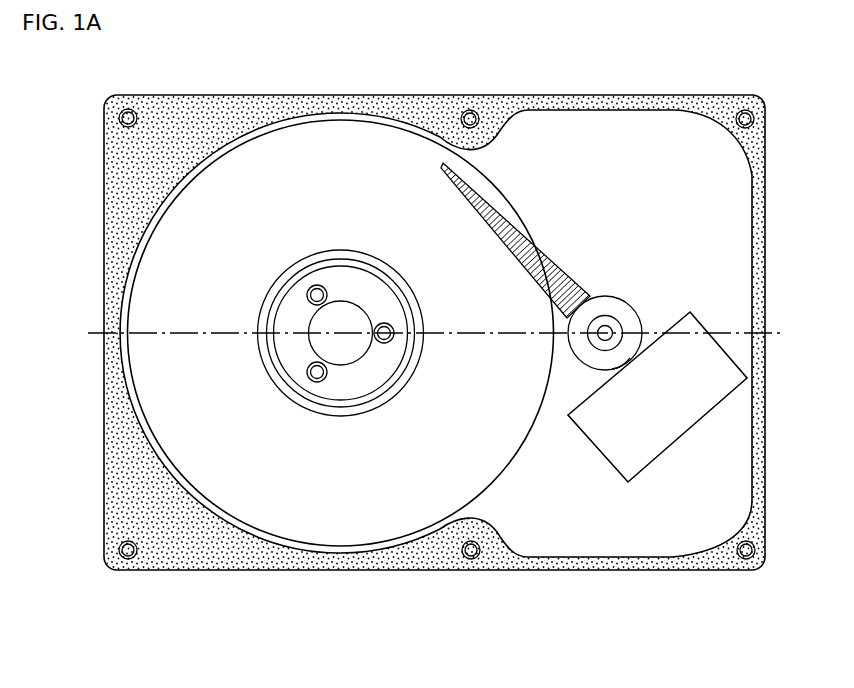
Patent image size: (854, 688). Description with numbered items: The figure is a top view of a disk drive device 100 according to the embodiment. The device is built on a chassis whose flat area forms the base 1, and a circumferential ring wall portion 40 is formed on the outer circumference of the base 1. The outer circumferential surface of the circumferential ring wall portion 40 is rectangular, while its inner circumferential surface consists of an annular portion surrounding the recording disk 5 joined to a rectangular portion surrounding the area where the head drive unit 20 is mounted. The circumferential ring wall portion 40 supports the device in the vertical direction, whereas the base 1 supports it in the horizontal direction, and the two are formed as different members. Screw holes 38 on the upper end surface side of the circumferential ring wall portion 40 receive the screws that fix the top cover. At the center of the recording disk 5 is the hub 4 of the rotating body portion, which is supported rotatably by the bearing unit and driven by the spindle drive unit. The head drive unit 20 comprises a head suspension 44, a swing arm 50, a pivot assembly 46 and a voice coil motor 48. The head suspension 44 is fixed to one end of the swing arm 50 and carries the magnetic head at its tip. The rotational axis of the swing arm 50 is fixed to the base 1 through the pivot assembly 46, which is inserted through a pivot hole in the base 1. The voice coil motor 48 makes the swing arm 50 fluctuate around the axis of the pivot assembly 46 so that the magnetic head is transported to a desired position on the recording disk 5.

The disk drive device 100 is at (414, 670).
The base 1 is at (600, 540).
The hub 4 is at (358, 287).
The recording disk 5 is at (293, 524).
The head drive unit 20 is at (684, 300).
The screw hole 38 is at (127, 109).
The circumferential ring wall portion 40 is at (200, 552).
The head suspension 44 is at (498, 212).
The pivot assembly 46 is at (618, 312).
The voice coil motor 48 is at (735, 389).
The swing arm 50 is at (576, 288).